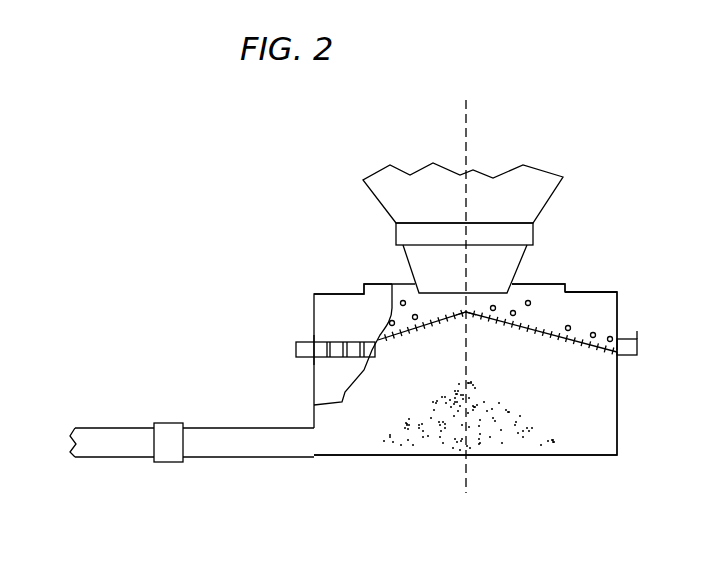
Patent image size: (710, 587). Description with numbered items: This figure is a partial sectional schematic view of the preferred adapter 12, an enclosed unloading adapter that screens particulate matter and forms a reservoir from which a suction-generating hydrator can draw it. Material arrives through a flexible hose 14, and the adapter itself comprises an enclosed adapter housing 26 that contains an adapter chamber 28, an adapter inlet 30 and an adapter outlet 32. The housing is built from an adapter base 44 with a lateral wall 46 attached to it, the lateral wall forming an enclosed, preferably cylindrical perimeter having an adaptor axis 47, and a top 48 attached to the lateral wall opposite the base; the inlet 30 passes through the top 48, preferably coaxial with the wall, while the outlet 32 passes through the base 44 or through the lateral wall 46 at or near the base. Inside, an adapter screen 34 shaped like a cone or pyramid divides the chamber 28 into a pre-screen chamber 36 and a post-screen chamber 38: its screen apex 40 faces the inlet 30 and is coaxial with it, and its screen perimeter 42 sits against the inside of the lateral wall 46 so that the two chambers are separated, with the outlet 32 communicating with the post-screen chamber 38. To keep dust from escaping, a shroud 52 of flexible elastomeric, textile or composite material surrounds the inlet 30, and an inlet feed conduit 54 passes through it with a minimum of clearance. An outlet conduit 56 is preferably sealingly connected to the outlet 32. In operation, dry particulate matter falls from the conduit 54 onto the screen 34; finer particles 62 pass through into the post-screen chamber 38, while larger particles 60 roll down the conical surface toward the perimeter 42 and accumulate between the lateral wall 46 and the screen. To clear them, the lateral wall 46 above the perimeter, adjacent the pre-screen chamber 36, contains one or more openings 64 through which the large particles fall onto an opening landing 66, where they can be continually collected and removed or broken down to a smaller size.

The adapter 12 is at (628, 176).
The flexible hose 14 is at (85, 457).
The adapter housing 26 is at (618, 432).
The adapter chamber 28 is at (563, 315).
The adapter inlet 30 is at (523, 283).
The adapter outlet 32 is at (312, 422).
The adapter screen 34 is at (540, 338).
The pre-screen chamber 36 is at (604, 320).
The post-screen chamber 38 is at (582, 418).
The screen apex 40 is at (465, 312).
The screen perimeter 42 is at (620, 355).
The adapter base 44 is at (365, 455).
The lateral wall 46 is at (618, 296).
The adaptor axis 47 is at (465, 128).
The top 48 is at (328, 294).
The shroud 52 is at (562, 284).
The inlet feed conduit 54 is at (406, 263).
The outlet conduit 56 is at (246, 457).
The larger particles 60 is at (637, 335).
The finer particles 62 is at (503, 443).
The openings 64 is at (322, 342).
The opening landing 66 is at (296, 349).